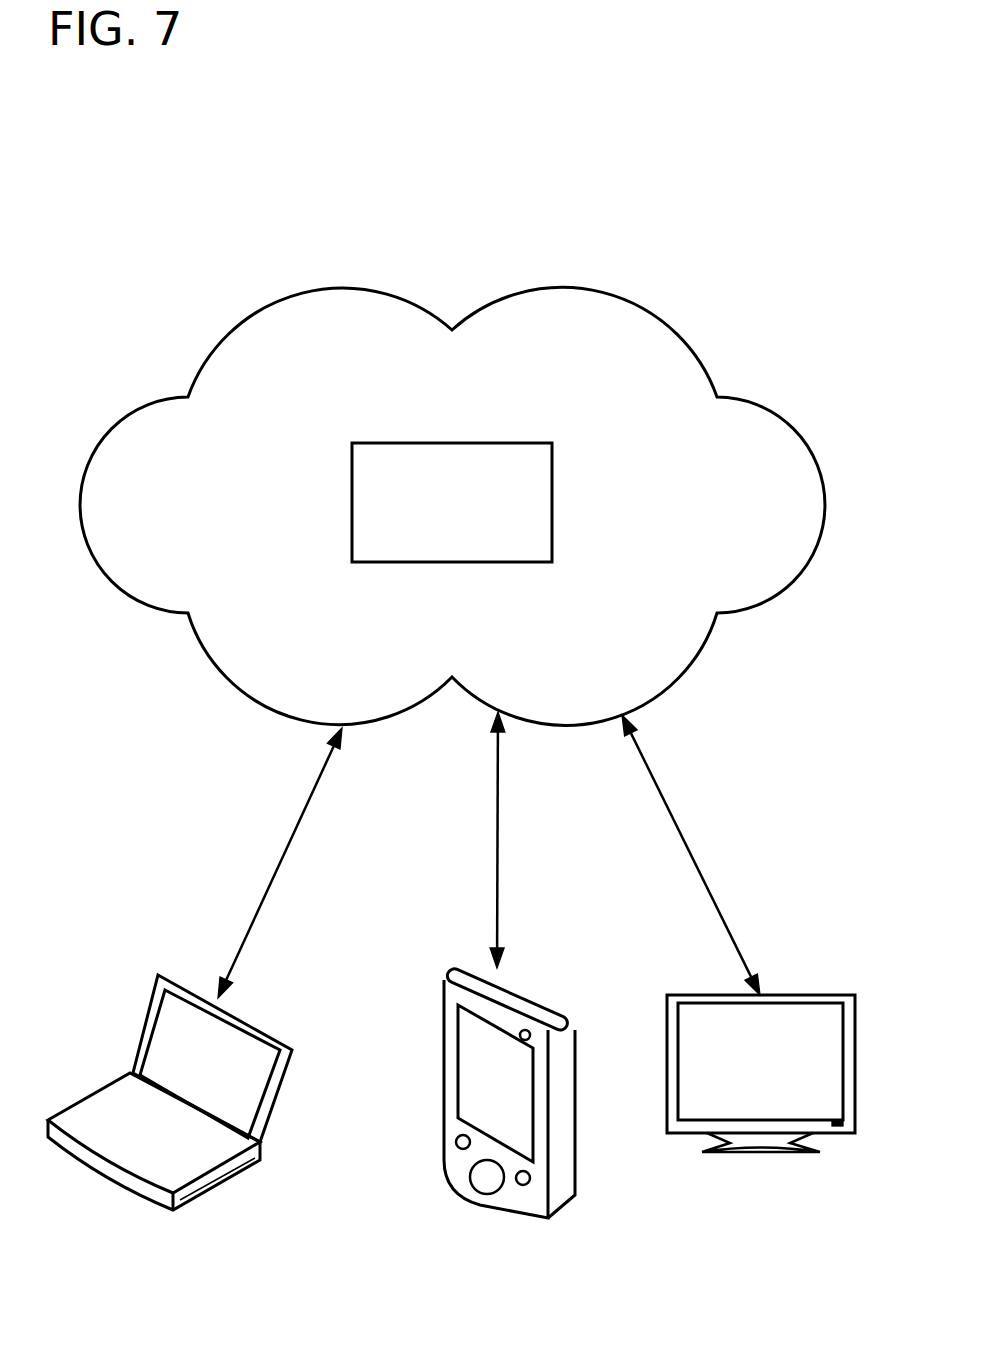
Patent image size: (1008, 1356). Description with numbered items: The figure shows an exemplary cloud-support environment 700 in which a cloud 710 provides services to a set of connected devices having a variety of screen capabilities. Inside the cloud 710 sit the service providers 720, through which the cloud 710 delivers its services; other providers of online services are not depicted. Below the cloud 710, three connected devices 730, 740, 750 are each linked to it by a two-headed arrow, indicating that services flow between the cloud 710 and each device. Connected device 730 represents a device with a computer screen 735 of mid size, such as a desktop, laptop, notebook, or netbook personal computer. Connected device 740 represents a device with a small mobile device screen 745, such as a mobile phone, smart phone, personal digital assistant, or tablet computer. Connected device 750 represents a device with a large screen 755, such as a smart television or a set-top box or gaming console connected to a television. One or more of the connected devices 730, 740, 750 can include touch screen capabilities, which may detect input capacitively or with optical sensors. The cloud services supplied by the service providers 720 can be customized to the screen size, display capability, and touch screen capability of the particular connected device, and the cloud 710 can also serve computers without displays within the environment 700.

The example environment 700 is at (803, 263).
The cloud 710 is at (431, 407).
The service providers 720 is at (431, 542).
The connected device 730 is at (62, 1110).
The computer screen 735 is at (224, 1076).
The connected device 740 is at (460, 957).
The mobile device screen 745 is at (519, 1101).
The connected device 750 is at (828, 992).
The large screen 755 is at (783, 1072).